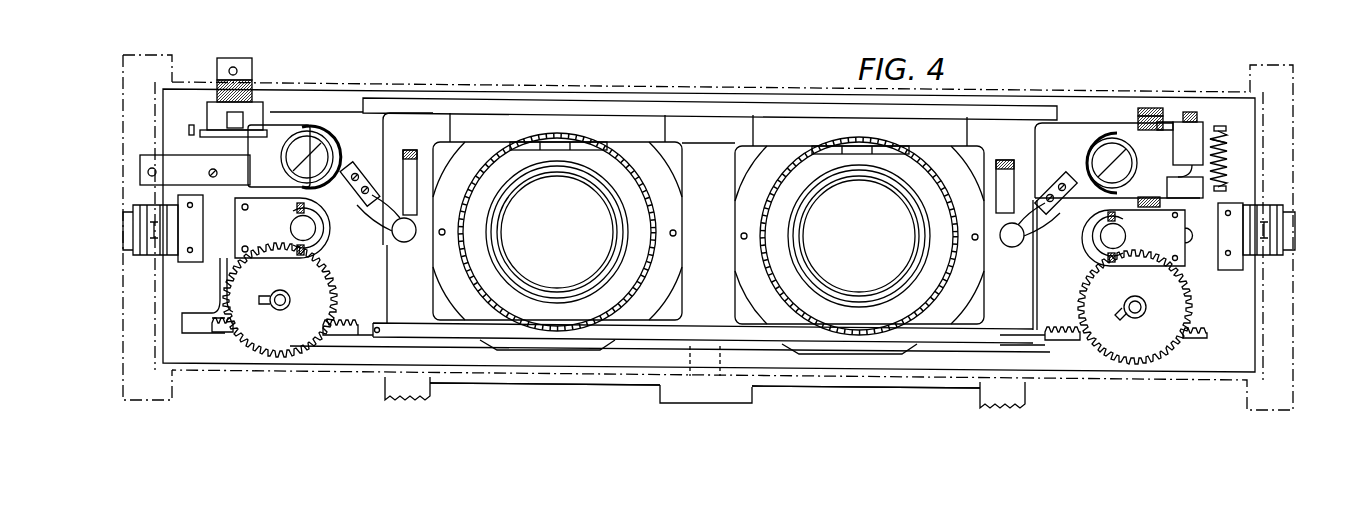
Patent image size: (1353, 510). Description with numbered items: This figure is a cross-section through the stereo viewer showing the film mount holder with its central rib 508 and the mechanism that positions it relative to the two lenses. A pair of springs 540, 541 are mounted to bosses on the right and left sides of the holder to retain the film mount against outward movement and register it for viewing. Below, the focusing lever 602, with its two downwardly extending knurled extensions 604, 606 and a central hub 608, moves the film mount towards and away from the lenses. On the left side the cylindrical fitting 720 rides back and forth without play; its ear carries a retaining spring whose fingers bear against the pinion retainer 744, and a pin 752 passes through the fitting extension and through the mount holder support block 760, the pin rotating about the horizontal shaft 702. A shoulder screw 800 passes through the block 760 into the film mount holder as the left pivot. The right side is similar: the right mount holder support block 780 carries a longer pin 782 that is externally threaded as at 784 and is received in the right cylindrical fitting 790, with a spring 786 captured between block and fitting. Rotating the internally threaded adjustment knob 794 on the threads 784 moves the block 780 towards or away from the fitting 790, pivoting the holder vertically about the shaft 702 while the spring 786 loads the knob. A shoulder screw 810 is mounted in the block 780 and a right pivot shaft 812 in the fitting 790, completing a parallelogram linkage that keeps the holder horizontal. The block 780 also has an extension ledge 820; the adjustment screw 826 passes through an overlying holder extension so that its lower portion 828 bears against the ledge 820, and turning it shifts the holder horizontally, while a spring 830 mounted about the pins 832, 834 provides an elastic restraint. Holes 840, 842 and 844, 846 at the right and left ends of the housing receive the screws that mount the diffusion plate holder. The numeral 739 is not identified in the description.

The central rib 508 is at (724, 199).
The spring 540 is at (1004, 160).
The spring 541 is at (410, 152).
The focusing lever 602 is at (893, 383).
The knurled extension 604 is at (410, 390).
The knurled extension 606 is at (1008, 392).
The central hub 608 is at (745, 393).
The shaft 702 is at (311, 233).
The cylindrical fitting 720 is at (205, 314).
The screw 739 is at (296, 251).
The pinion retainer 744 is at (323, 224).
The pin 752 is at (267, 193).
The mount holder support block 760 is at (267, 193).
The right mount holder support block 780 is at (1162, 157).
The pin 782 is at (1150, 208).
The threads 784 is at (1138, 124).
The spring 786 is at (1137, 205).
The right cylindrical fitting 790 is at (1096, 240).
The adjustment knob 794 is at (1168, 83).
The shoulder screw 800 is at (325, 157).
The shoulder screw 810 is at (1094, 152).
The right pivot shaft 812 is at (1112, 250).
The extension ledge 820 is at (1226, 168).
The adjustment screw 826 is at (1190, 112).
The lower portion of adjustment screw 828 is at (1192, 178).
The spring 830 is at (1226, 147).
The pin 832 is at (1241, 123).
The pin 834 is at (1227, 190).
The hole 840 is at (1231, 213).
The hole 842 is at (1228, 256).
The hole 844 is at (190, 203).
The hole 846 is at (190, 253).